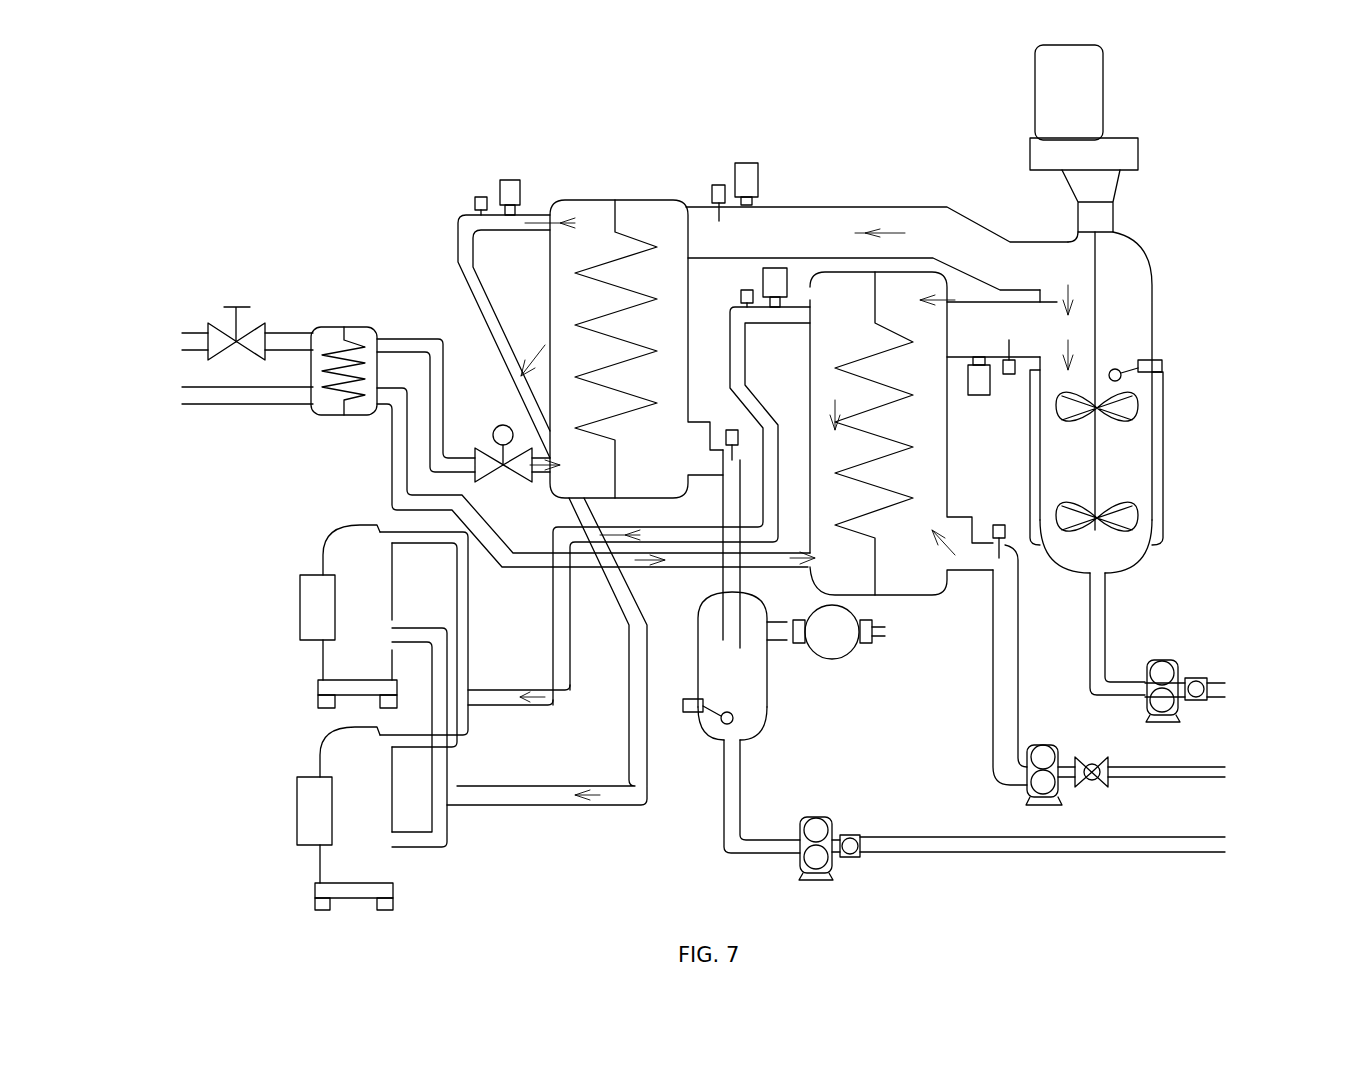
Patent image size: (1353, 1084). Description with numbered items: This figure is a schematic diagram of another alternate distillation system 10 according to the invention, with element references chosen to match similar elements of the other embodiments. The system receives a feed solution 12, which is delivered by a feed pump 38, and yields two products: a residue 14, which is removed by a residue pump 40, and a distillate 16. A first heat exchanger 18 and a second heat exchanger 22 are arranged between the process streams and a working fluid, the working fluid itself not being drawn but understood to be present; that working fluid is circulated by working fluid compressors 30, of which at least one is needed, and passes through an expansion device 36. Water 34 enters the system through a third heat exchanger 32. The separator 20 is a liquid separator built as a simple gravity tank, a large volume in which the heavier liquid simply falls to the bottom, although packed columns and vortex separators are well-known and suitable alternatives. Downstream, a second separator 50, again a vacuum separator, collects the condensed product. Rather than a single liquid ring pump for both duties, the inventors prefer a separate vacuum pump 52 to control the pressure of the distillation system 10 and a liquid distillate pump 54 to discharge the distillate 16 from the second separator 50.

The distillation system 10 is at (228, 138).
The feed solution 12 is at (1268, 780).
The residue 14 is at (1268, 698).
The distillate 16 is at (1268, 858).
The first heat exchanger 18 is at (917, 304).
The separator 20 is at (1134, 242).
The second heat exchanger 22 is at (658, 210).
The working fluid compressors 30 is at (260, 525).
The third heat exchanger 32 is at (344, 327).
The water 34 is at (157, 383).
The expansion device 36 is at (492, 474).
The feed pump 38 is at (1043, 743).
The residue pump 40 is at (1163, 660).
The second separator 50 is at (747, 695).
The vacuum pump 52 is at (851, 656).
The distillate pump 54 is at (816, 817).